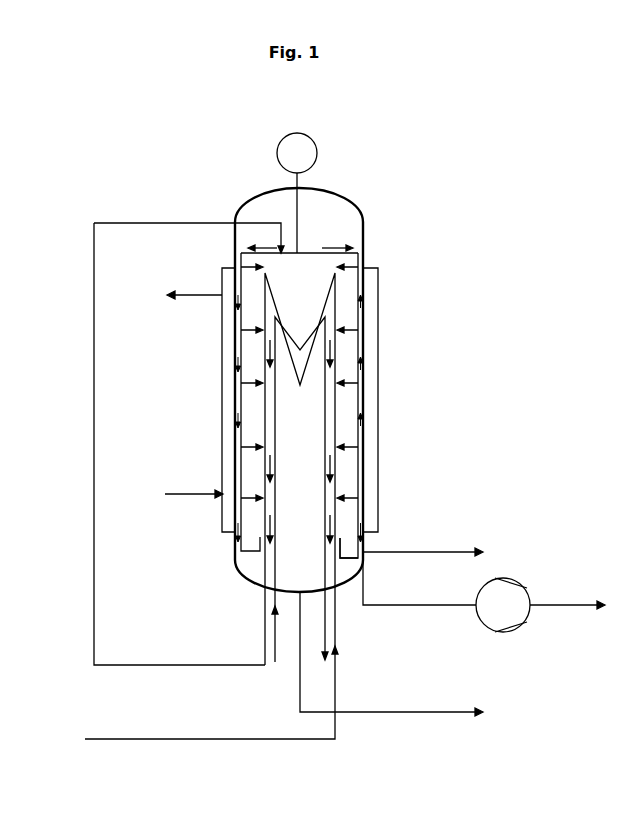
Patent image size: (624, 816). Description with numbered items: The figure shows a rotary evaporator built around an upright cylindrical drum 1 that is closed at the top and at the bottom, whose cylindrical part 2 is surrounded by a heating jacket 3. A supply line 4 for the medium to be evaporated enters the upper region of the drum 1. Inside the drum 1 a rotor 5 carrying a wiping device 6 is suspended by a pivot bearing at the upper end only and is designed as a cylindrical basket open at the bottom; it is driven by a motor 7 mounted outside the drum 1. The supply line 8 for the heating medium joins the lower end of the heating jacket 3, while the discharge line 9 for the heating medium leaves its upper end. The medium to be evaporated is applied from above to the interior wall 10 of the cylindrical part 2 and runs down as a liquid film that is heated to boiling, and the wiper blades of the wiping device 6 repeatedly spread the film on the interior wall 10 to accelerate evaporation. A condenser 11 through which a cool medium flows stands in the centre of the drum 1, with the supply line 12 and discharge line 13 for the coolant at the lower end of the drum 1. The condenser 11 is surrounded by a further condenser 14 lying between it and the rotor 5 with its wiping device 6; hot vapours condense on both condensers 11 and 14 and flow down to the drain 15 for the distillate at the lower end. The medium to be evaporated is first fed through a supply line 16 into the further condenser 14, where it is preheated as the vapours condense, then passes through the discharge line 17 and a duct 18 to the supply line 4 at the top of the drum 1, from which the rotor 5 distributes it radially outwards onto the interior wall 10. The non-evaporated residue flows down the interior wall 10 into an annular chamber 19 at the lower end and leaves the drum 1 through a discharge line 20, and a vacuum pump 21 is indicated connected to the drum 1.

The drum 1 is at (328, 188).
The cylindrical part 2 is at (363, 233).
The heating jacket 3 is at (372, 348).
The supply line 4 is at (213, 222).
The rotor 5 is at (318, 252).
The wiping device 6 is at (363, 258).
The motor 7 is at (277, 152).
The supply line 8 is at (178, 492).
The discharge line 9 is at (180, 297).
The interior wall 10 is at (243, 252).
The condenser 11 is at (277, 448).
The supply line 12 is at (273, 667).
The discharge line 13 is at (323, 640).
The further condenser 14 is at (335, 432).
The drain 15 is at (452, 707).
The supply line 16 is at (337, 618).
The discharge line 17 is at (263, 605).
The duct 18 is at (93, 475).
The annular chamber 19 is at (365, 553).
The discharge line 20 is at (452, 550).
The vacuum pump 21 is at (525, 582).